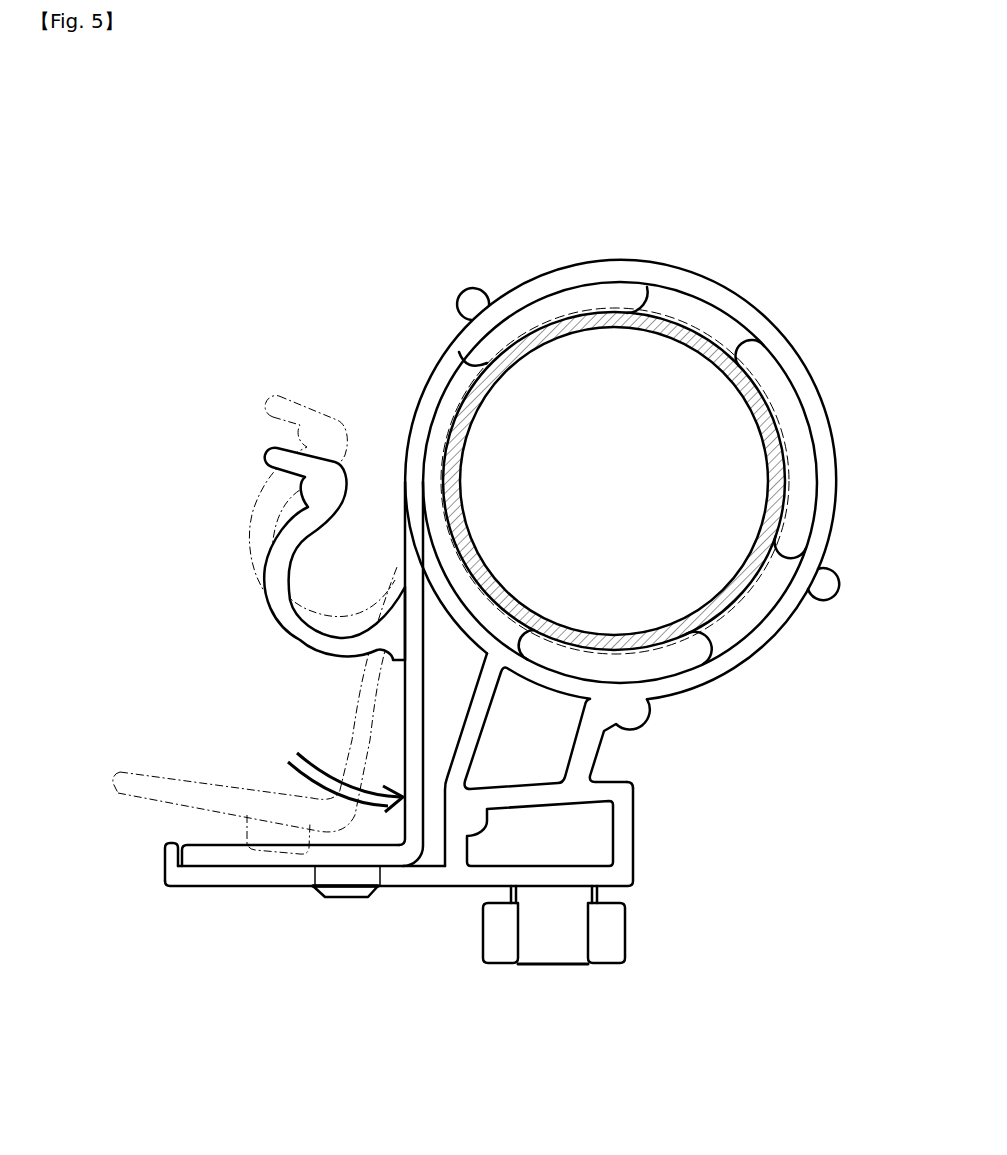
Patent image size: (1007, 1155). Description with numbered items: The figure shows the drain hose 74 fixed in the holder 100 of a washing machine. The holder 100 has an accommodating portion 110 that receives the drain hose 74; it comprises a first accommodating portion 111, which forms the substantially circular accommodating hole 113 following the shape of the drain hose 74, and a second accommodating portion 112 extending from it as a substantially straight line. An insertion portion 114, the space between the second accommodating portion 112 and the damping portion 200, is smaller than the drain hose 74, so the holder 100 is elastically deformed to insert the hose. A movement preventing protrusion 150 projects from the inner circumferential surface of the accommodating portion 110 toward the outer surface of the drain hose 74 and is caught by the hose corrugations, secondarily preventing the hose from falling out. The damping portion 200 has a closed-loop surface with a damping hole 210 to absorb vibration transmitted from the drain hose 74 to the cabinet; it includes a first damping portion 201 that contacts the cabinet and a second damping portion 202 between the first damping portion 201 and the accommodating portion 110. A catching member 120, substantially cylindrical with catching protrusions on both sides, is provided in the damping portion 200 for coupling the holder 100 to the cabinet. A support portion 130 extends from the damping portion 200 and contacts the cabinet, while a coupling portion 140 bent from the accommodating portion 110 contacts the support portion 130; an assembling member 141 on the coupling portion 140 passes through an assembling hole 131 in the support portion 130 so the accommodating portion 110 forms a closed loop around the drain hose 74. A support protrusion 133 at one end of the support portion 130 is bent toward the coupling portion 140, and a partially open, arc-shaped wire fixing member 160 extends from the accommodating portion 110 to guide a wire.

The holder 100 is at (366, 117).
The accommodating portion 110 is at (290, 322).
The first accommodating portion 111 is at (450, 343).
The second accommodating portion 112 is at (405, 548).
The accommodating hole 113 is at (710, 336).
The insertion portion 114 is at (445, 743).
The catching member 120 is at (549, 973).
The support portion 130 is at (210, 886).
The assembling hole 131 is at (342, 877).
The support protrusion 133 is at (168, 851).
The coupling portion 140 is at (197, 843).
The assembling member 141 is at (333, 892).
The movement preventing protrusion 150 is at (577, 305).
The wire fixing member 160 is at (272, 458).
The damping portion 200 is at (790, 722).
The first damping portion 201 is at (630, 823).
The second damping portion 202 is at (595, 745).
The damping hole 210 is at (488, 773).
The drain hose 74 is at (687, 327).